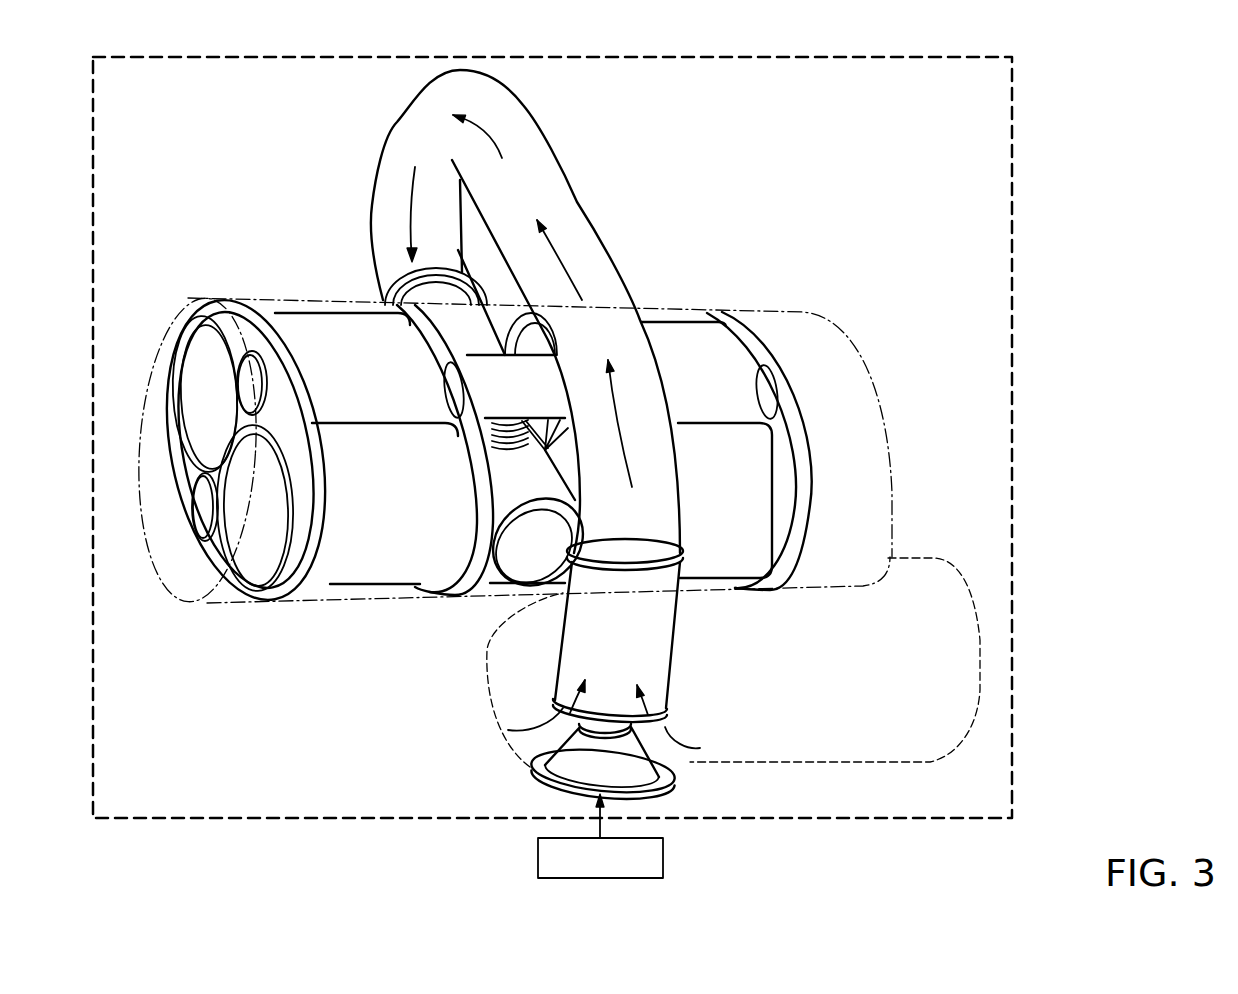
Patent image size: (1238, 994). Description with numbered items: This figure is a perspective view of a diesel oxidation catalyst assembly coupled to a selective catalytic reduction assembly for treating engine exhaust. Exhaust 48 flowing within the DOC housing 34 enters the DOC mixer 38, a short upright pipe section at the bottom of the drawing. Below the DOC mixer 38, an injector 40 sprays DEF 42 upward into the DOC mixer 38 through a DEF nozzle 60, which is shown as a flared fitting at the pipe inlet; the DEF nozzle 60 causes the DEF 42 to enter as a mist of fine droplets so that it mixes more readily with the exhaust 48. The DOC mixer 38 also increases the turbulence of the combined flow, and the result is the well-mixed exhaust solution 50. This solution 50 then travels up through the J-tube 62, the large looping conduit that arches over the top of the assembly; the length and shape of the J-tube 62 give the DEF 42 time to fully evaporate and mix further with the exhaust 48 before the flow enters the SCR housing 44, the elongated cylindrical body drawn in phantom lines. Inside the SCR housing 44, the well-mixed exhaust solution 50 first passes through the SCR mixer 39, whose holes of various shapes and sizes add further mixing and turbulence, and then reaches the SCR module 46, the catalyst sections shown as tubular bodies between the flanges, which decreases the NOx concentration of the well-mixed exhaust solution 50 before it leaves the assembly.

The DOC housing 34 is at (982, 658).
The DOC mixer 38 is at (570, 637).
The SCR mixer 39 is at (520, 497).
The injector 40 is at (665, 860).
The DEF 42 is at (607, 810).
The SCR housing 44 is at (293, 300).
The SCR module 46 is at (723, 347).
The exhaust 48 is at (557, 722).
The well-mixed exhaust solution 50 is at (485, 127).
The DEF nozzle 60 is at (557, 783).
The J-tube 62 is at (550, 190).